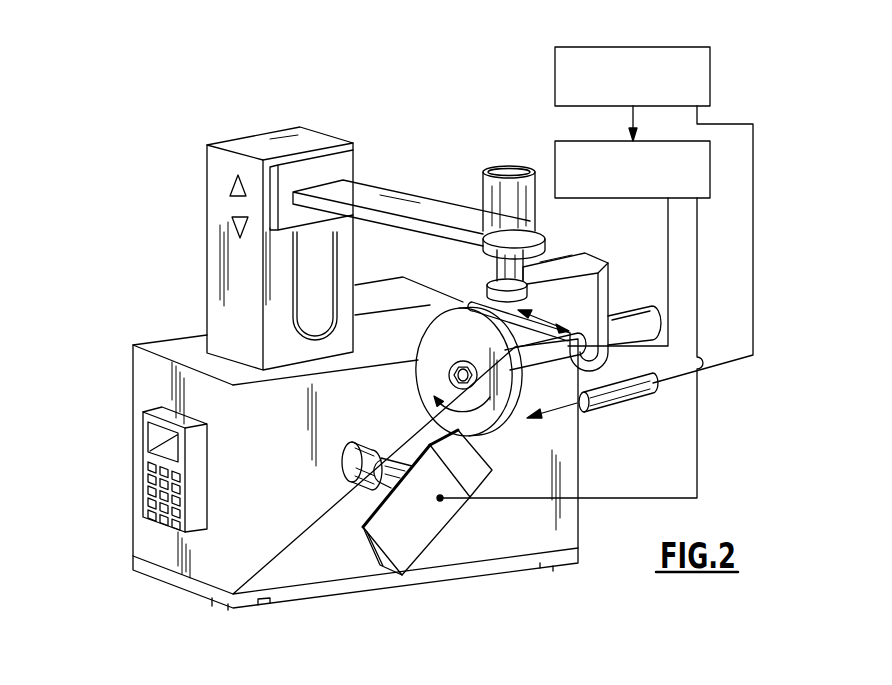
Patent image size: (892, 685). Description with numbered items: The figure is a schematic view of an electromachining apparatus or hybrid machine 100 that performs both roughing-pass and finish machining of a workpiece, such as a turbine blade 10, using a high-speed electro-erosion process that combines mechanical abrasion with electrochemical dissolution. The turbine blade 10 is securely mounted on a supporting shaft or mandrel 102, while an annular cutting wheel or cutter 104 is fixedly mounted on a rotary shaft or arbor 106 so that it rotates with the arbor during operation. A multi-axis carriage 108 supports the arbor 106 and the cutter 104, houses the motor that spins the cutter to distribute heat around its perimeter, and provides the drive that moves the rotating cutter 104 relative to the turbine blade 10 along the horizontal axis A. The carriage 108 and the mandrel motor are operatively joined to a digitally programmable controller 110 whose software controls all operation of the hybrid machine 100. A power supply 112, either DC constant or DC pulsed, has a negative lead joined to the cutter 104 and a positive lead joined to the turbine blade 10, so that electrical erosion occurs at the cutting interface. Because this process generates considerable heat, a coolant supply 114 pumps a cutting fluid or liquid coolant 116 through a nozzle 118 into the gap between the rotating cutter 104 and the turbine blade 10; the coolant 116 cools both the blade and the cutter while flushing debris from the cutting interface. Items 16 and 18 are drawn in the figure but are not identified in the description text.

The turbine blade 10 is at (482, 503).
The workpiece 16 is at (481, 483).
The workpiece fixture 18 is at (412, 556).
The hybrid machine 100 is at (285, 444).
The mandrel 102 is at (342, 462).
The cutter 104 is at (423, 386).
The arbor 106 is at (493, 322).
The multi-axis carriage 108 is at (207, 175).
The digitally programmable controller 110 is at (143, 490).
The power supply 112 is at (555, 148).
The coolant supply 114 is at (555, 75).
The coolant 116 is at (560, 410).
The nozzle 118 is at (610, 397).
The horizontal axis A is at (545, 320).